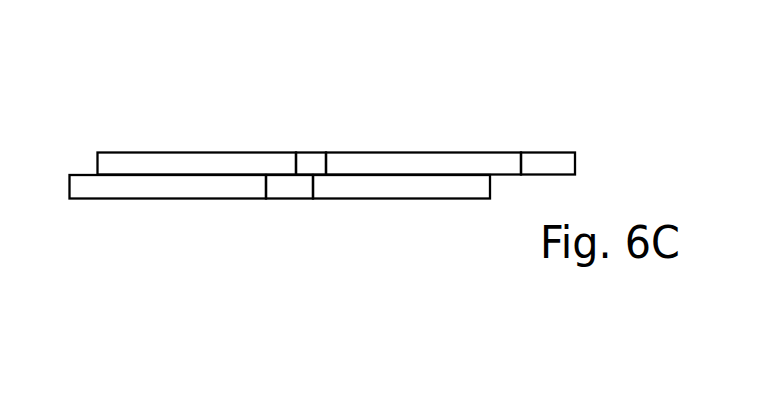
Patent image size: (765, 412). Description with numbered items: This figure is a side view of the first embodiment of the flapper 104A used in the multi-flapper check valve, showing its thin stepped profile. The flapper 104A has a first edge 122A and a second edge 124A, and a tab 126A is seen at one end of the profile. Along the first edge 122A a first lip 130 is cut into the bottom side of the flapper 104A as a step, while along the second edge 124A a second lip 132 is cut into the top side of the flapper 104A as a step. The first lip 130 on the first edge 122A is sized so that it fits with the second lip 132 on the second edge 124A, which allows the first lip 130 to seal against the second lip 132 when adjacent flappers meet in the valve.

The flapper 104A is at (247, 109).
The second edge 124A is at (140, 164).
The first edge 122A is at (390, 158).
The tab 126A is at (550, 162).
The second lip 132 is at (162, 185).
The first lip 130 is at (430, 184).